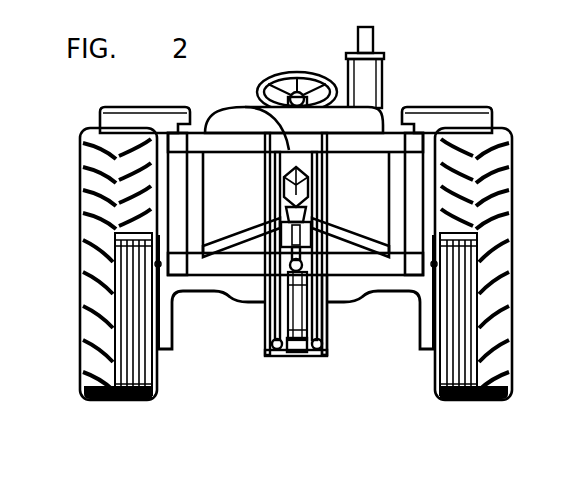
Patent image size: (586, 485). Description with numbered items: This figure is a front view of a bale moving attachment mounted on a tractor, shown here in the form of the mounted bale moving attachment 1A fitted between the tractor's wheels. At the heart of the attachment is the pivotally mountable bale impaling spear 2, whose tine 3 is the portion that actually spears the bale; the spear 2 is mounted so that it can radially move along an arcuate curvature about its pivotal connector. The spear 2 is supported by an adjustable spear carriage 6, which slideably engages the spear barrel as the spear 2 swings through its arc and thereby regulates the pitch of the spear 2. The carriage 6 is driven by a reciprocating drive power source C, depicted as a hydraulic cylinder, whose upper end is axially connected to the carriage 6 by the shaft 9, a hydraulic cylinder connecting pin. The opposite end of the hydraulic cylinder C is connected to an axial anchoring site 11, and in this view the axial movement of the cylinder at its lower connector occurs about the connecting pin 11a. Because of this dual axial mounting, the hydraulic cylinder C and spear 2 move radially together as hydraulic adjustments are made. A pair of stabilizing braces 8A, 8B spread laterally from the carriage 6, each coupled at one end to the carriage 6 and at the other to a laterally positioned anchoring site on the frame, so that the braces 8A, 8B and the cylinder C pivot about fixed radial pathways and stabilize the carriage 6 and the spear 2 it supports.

The rear mounted bale moving attachment 1A is at (310, 193).
The bale impaling spear 2 is at (324, 172).
The tine 3 is at (263, 108).
The adjustable spear carriage 6 is at (286, 200).
The stabilizing brace 8A is at (242, 258).
The stabilizing brace 8B is at (350, 262).
The shaft 9 is at (316, 226).
The reciprocating drive power source C is at (280, 303).
The axial anchoring site 11 is at (276, 357).
The connecting pin 11a is at (334, 332).